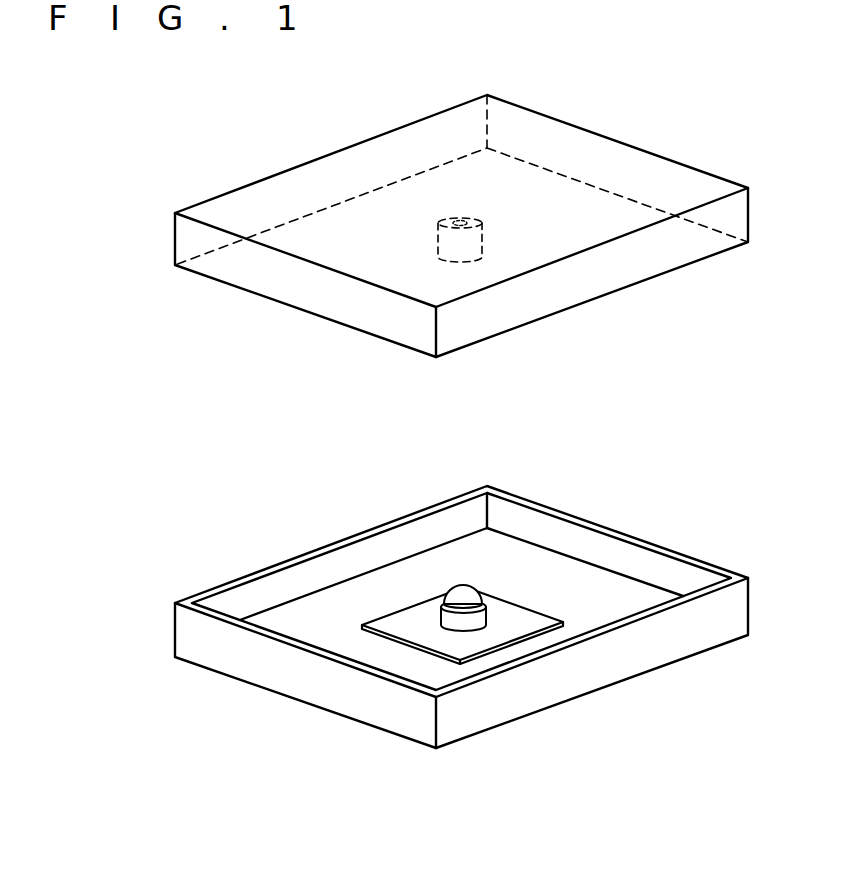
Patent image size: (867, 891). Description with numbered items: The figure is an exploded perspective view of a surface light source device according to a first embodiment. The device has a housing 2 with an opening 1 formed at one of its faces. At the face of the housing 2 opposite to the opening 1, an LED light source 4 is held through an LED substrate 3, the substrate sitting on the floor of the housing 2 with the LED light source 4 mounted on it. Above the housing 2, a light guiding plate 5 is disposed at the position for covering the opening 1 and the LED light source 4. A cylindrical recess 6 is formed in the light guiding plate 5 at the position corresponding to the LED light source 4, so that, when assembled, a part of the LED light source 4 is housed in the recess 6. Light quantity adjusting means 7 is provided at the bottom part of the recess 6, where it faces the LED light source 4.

The opening 1 is at (673, 560).
The housing 2 is at (655, 652).
The LED substrate 3 is at (537, 620).
The LED light source 4 is at (447, 620).
The light guiding plate 5 is at (283, 228).
The cylindrical recess 6 is at (479, 240).
The light quantity adjusting means 7 is at (462, 221).